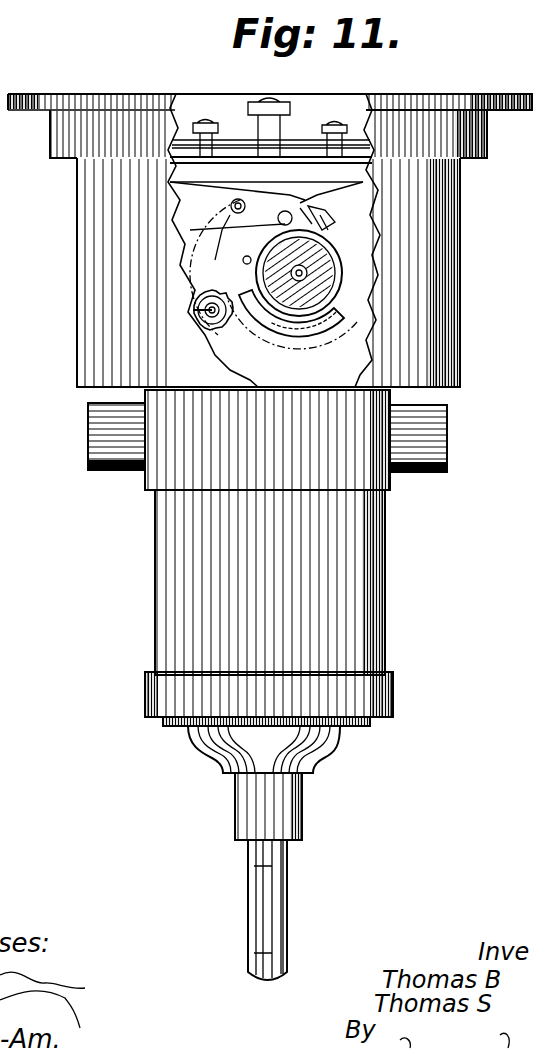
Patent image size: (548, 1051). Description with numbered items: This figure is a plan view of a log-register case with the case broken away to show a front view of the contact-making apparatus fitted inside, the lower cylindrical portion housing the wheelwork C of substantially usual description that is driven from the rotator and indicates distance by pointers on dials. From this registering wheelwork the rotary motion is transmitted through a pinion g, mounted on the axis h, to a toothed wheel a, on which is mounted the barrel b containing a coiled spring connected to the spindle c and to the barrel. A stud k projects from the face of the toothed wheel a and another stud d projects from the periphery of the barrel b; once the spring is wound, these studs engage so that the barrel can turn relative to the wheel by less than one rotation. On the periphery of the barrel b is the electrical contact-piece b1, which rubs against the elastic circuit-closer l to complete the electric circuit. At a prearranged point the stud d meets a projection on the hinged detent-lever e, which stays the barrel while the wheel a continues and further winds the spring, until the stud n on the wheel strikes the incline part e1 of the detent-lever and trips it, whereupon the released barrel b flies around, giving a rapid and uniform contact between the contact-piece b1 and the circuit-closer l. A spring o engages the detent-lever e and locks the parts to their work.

The barrel b is at (340, 282).
The electrical contact-piece b1 is at (300, 335).
The spring o is at (271, 144).
The detent-lever e is at (308, 206).
The incline part e1 is at (231, 208).
The stud n is at (287, 211).
The stud d is at (328, 226).
The spindle c is at (335, 262).
The toothed wheel a is at (262, 330).
The stud k is at (243, 250).
The circuit-closer l is at (214, 240).
The pinion g is at (196, 322).
The axis h is at (192, 310).
The wheelwork C is at (387, 553).